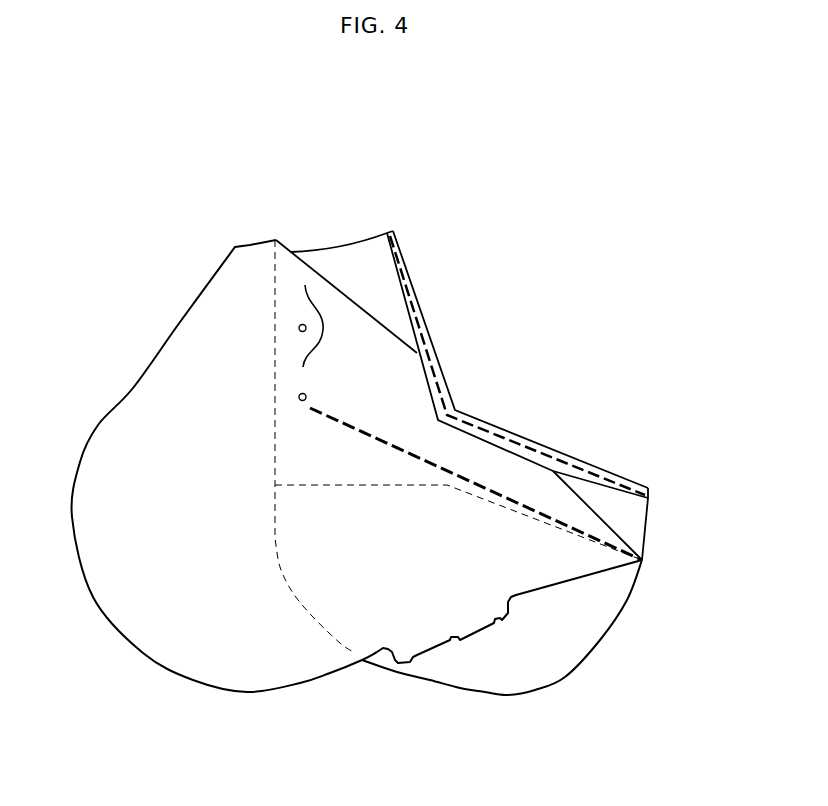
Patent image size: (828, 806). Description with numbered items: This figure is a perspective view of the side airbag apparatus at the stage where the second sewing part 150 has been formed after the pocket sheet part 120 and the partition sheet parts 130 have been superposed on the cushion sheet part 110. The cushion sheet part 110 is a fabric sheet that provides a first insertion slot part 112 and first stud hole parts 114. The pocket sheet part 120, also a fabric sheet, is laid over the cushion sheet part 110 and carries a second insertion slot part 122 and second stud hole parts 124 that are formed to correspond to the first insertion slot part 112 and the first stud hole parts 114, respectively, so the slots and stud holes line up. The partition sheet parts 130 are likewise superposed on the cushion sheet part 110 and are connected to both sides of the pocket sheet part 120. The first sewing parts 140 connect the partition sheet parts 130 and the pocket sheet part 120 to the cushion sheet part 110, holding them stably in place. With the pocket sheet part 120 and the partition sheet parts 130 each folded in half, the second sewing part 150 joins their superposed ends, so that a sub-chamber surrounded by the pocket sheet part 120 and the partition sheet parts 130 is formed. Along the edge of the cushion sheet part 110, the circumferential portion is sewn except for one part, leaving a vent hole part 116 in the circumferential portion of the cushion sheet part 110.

The cushion sheet part 110 is at (158, 318).
The pocket sheet part 120 is at (347, 253).
The first insertion slot part 112 is at (419, 294).
The second insertion slot part 122 is at (316, 310).
The first stud hole parts 114 is at (441, 361).
The second stud hole parts 124 is at (306, 397).
The second sewing part 150 is at (417, 298).
The first sewing parts 140 is at (400, 450).
The partition sheet parts 130 is at (612, 503).
The vent hole part 116 is at (473, 630).